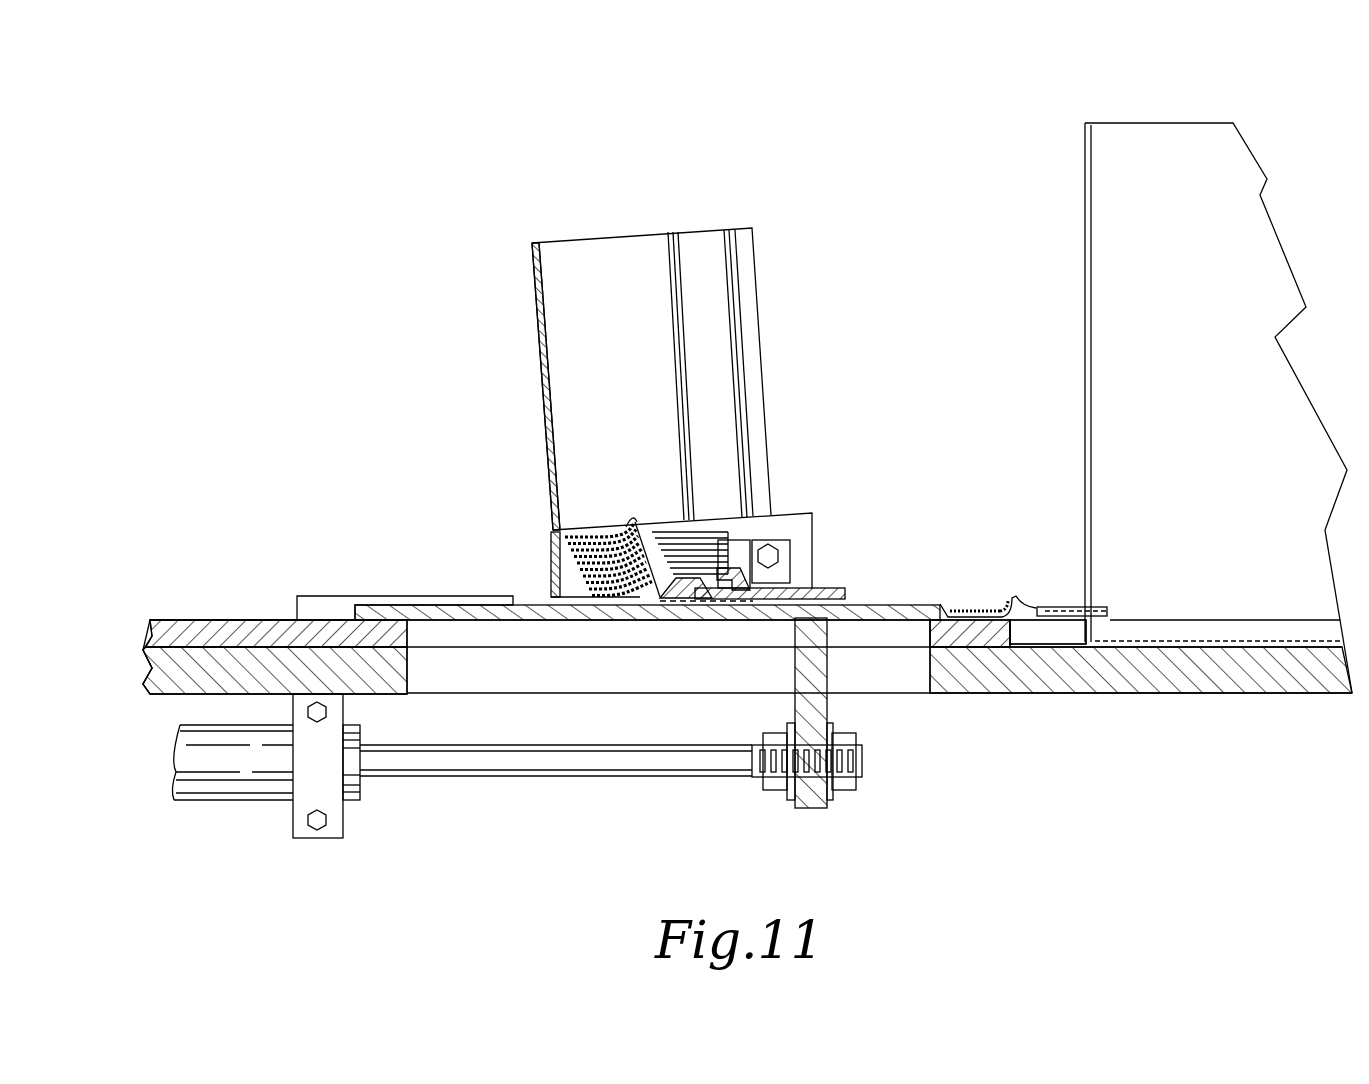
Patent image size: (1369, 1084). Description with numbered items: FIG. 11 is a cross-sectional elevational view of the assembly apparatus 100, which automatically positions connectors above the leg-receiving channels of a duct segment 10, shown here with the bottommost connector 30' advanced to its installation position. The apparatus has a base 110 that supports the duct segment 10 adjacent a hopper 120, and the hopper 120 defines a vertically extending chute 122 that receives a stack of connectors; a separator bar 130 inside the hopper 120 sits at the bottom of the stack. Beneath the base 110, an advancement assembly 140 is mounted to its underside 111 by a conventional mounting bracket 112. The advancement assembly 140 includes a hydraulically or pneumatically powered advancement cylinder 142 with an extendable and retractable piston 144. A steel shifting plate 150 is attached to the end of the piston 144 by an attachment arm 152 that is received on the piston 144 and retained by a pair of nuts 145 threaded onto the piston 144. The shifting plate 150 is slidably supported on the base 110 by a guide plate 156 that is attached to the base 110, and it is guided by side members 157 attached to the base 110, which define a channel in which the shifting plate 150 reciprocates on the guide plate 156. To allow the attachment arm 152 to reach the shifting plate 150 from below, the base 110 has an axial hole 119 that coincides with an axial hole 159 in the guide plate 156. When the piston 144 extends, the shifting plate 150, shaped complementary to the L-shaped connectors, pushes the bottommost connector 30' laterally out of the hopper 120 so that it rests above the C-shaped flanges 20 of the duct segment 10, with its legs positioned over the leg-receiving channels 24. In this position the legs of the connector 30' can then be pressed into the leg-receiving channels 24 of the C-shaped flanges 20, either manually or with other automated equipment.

The duct segment 10 is at (1245, 123).
The C-shaped flange 20 is at (1228, 618).
The leg-receiving channel 24 is at (1048, 618).
The bottommost connector 30' is at (1072, 574).
The assembly apparatus 100 is at (187, 610).
The base 110 is at (1322, 688).
The underside 111 is at (187, 698).
The mounting bracket 112 is at (327, 840).
The axial hole 119 is at (922, 680).
The hopper 120 is at (538, 342).
The chute 122 is at (656, 435).
The separator bar 130 is at (672, 598).
The advancement assembly 140 is at (262, 852).
The advancement cylinder 142 is at (348, 780).
The piston 144 is at (530, 760).
The nuts 145 is at (775, 785).
The shifting plate 150 is at (885, 603).
The attachment arm 152 is at (820, 712).
The guide plate 156 is at (247, 612).
The side members 157 is at (358, 605).
The axial hole 159 is at (540, 630).